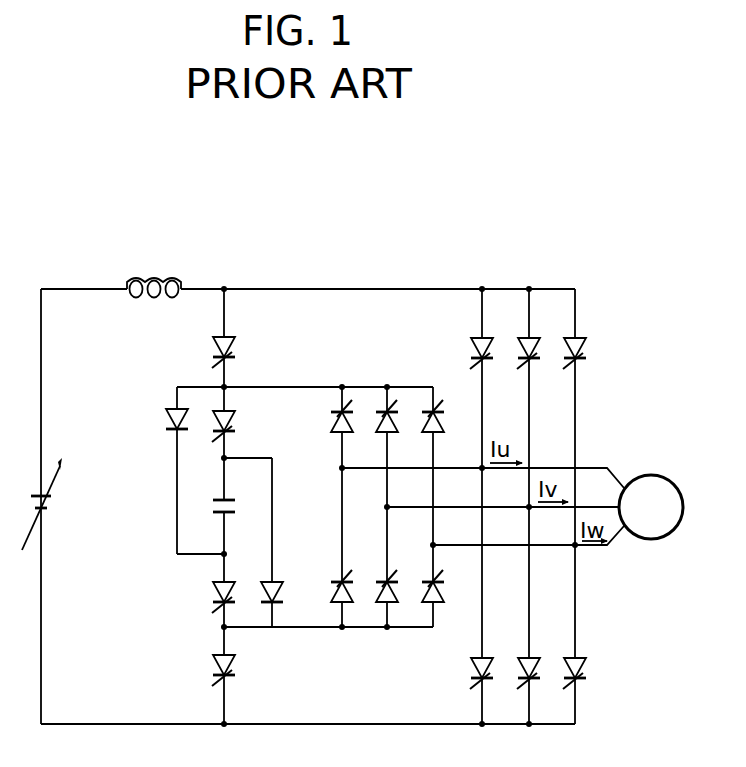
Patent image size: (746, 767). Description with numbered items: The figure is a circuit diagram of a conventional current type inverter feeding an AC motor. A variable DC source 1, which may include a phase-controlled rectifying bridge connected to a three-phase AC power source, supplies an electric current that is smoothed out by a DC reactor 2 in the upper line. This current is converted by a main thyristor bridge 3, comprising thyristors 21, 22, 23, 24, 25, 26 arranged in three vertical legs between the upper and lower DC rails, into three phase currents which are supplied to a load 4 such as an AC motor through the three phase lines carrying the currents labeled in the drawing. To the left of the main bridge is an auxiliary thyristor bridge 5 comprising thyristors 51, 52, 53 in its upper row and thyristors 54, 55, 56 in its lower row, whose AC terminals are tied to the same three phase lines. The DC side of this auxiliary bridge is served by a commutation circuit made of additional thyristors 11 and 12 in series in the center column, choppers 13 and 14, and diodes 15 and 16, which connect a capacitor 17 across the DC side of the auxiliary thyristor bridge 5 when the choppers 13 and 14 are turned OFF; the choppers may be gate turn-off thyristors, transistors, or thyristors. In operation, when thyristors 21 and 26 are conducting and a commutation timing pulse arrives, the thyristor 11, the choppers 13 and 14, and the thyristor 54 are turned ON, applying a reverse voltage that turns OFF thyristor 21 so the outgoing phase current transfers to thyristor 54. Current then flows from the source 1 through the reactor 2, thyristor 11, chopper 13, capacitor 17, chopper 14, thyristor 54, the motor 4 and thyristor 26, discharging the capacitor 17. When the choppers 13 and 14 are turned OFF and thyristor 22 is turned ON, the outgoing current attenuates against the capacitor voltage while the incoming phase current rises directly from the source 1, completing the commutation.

The variable DC source 1 is at (52, 504).
The DC reactor 2 is at (151, 278).
The main thyristor bridge 3 is at (544, 462).
The load 4 is at (648, 475).
The auxiliary thyristor bridge 5 is at (384, 472).
The thyristor 11 is at (236, 350).
The thyristor 12 is at (236, 668).
The chopper 13 is at (236, 421).
The chopper 14 is at (213, 592).
The diode 15 is at (167, 420).
The diode 16 is at (283, 590).
The capacitor 17 is at (233, 506).
The thyristor 21 is at (491, 348).
The thyristor 22 is at (538, 348).
The thyristor 23 is at (586, 348).
The thyristor 24 is at (491, 668).
The thyristor 25 is at (538, 668).
The thyristor 26 is at (586, 668).
The thyristor 51 is at (352, 426).
The thyristor 52 is at (397, 426).
The thyristor 53 is at (443, 426).
The thyristor 54 is at (333, 592).
The thyristor 55 is at (378, 594).
The thyristor 56 is at (424, 594).